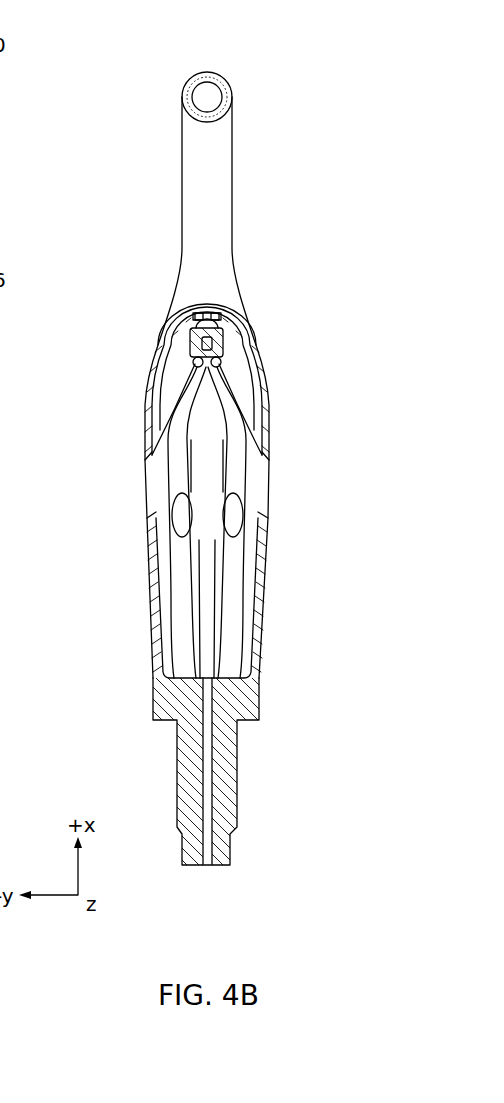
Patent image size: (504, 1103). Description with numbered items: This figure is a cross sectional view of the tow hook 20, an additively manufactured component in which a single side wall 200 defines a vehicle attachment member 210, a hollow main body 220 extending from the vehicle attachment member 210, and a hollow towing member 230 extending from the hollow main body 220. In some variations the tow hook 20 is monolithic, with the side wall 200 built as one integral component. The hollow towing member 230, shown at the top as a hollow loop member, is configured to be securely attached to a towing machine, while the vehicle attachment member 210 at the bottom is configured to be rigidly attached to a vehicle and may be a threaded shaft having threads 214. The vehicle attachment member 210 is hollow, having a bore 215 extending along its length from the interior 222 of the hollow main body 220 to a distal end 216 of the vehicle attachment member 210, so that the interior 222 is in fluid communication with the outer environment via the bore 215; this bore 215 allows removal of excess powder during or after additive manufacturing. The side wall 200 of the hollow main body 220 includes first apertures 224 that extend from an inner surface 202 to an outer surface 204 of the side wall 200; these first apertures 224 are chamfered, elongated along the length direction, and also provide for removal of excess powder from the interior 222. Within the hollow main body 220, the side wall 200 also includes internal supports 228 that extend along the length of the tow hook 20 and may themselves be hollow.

The tow hook 20 is at (309, 45).
The side wall 200 is at (208, 74).
The inner surface 202 is at (265, 470).
The outer surface 204 is at (266, 552).
The vehicle attachment member 210 is at (150, 787).
The threads 214 is at (238, 522).
The bore 215 is at (206, 778).
The distal end 216 is at (222, 866).
The hollow main body 220 is at (128, 540).
The interior 222 is at (206, 602).
The first apertures 224 is at (177, 512).
The internal supports 228 is at (180, 412).
The hollow towing member 230 is at (152, 168).